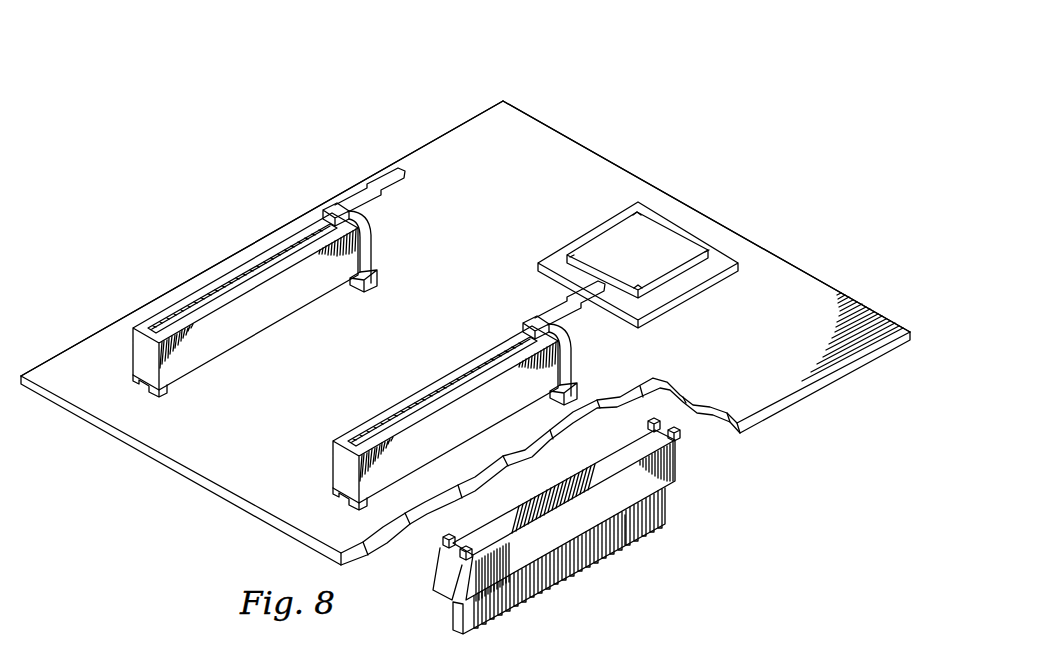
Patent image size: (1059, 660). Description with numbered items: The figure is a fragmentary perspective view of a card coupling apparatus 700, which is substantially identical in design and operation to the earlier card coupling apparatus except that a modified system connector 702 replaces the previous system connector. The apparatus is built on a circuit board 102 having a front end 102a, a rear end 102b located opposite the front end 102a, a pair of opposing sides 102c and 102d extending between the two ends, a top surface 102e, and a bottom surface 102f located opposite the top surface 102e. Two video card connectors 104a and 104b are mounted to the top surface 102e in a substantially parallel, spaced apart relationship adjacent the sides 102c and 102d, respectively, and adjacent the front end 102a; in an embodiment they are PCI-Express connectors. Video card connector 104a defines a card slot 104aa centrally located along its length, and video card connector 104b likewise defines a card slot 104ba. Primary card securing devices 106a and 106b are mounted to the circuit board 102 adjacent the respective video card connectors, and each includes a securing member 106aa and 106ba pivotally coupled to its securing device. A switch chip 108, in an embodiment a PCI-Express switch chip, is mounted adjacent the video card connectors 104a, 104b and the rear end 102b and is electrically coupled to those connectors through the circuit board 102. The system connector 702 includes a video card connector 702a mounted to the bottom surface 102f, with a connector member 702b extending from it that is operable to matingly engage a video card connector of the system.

The card coupling apparatus 700 is at (380, 72).
The circuit board 102 is at (469, 117).
The front end 102a is at (165, 468).
The rear end 102b is at (765, 246).
The side 102c is at (175, 290).
The side 102d is at (822, 392).
The top surface 102e is at (556, 150).
The bottom surface 102f is at (770, 432).
The video card connector 104a is at (194, 297).
The card slot 104aa is at (262, 265).
The video card connector 104b is at (401, 418).
The card slot 104ba is at (440, 405).
The primary card securing device 106a is at (346, 205).
The securing member 106aa is at (378, 192).
The primary card securing device 106b is at (574, 330).
The securing member 106ba is at (590, 306).
The switch chip 108 is at (660, 240).
The system connector 702 is at (634, 578).
The video card connector 702a is at (672, 480).
The connector member 702b is at (530, 600).